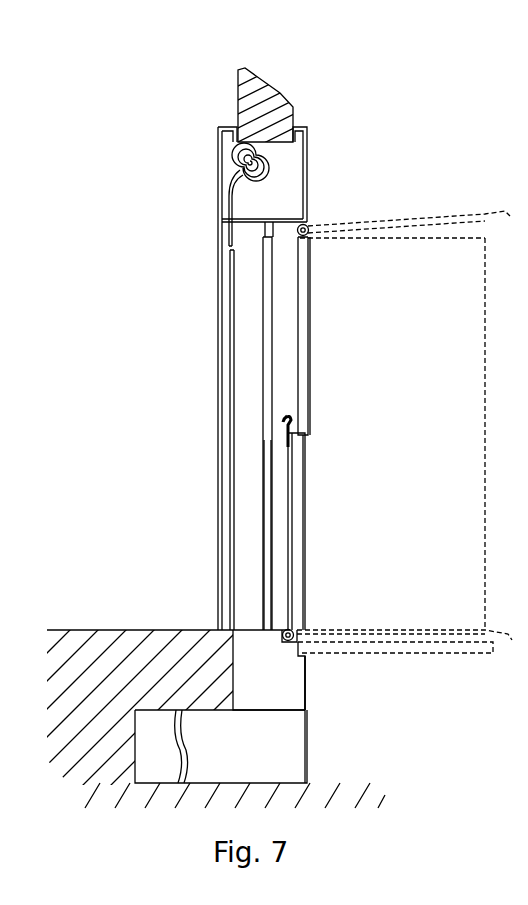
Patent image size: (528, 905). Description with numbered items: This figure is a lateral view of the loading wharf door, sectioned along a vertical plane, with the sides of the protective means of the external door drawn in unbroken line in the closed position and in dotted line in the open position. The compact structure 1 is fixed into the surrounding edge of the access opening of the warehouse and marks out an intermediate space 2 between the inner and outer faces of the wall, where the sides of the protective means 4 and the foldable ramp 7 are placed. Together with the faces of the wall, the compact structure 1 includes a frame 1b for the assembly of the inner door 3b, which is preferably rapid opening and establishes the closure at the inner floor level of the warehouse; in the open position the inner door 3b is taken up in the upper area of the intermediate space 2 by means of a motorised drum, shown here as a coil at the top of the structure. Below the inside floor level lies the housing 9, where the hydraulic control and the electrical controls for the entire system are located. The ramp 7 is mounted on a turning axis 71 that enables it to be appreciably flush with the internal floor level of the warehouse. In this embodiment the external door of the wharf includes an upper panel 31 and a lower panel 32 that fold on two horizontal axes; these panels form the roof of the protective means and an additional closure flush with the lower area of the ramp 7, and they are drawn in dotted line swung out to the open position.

The compact structure 1 is at (216, 160).
The frame 1b is at (224, 378).
The intermediate space 2 is at (248, 320).
The inner door 3b is at (226, 192).
The sides of the protective means 4 is at (270, 466).
The ramp 7 is at (290, 508).
The housing 9 is at (272, 683).
The upper panel 31 is at (303, 296).
The lower panel 32 is at (300, 536).
The turning axis 71 is at (292, 628).